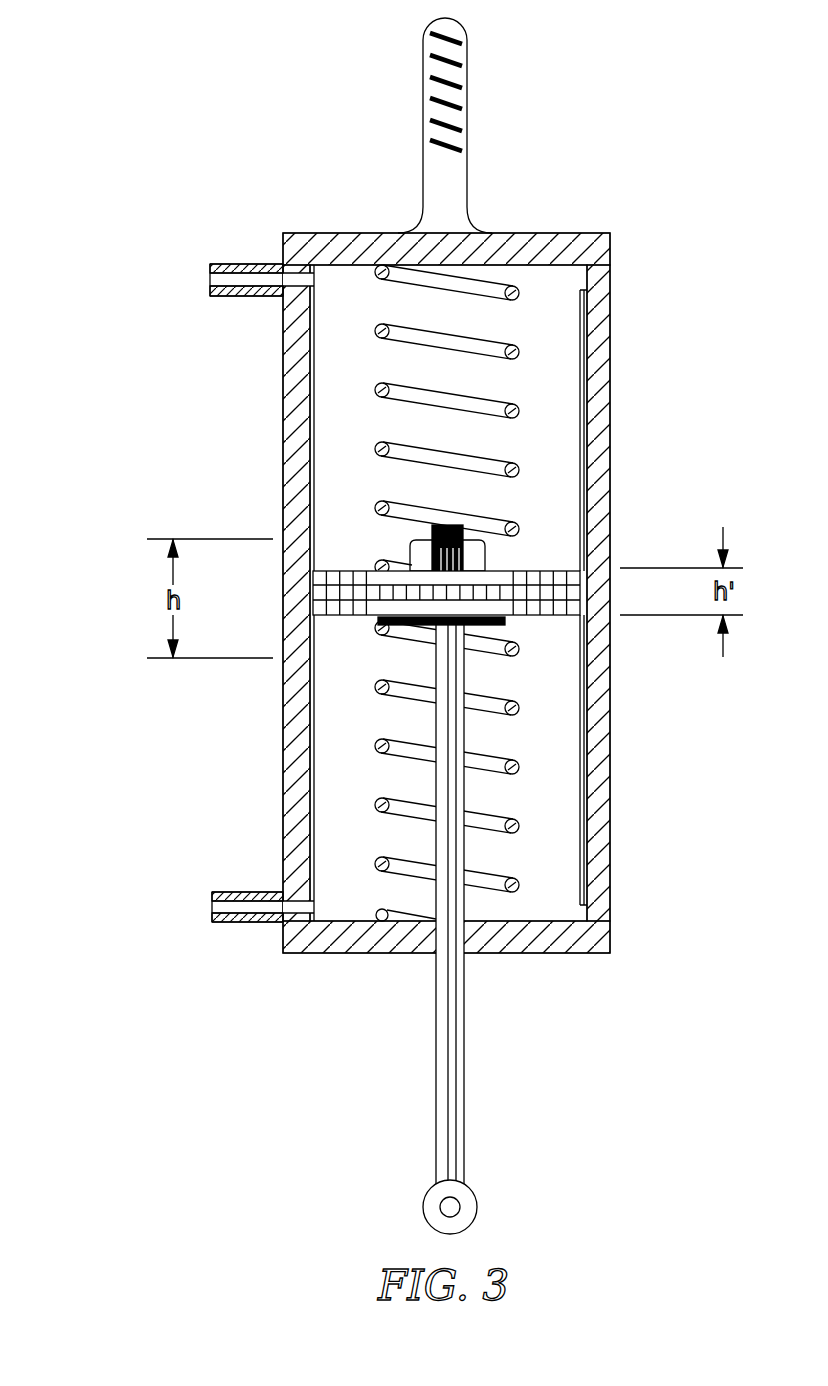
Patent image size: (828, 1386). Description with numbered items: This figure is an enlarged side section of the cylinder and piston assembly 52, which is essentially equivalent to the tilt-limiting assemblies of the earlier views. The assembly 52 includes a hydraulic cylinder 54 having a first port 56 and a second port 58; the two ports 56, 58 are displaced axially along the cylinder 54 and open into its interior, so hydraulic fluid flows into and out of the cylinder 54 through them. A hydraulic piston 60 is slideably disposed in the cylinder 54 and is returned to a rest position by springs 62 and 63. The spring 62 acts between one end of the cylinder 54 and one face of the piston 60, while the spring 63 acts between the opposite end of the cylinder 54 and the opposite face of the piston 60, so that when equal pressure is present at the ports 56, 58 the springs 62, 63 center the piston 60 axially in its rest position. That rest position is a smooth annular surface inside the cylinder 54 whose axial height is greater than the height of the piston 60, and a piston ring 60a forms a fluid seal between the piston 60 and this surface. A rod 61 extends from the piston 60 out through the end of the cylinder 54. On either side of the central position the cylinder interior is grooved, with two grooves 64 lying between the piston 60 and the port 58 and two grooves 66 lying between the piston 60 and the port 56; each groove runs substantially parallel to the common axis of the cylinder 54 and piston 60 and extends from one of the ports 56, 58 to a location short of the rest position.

The cylinder and piston assembly 52 is at (242, 348).
The hydraulic cylinder 54 is at (283, 424).
The first port 56 is at (258, 263).
The second port 58 is at (256, 924).
The hydraulic piston 60 is at (583, 574).
The piston ring 60a is at (362, 571).
The rod 61 is at (464, 1060).
The spring 62 is at (520, 353).
The spring 63 is at (520, 827).
The grooves 64 is at (312, 704).
The grooves 66 is at (283, 470).